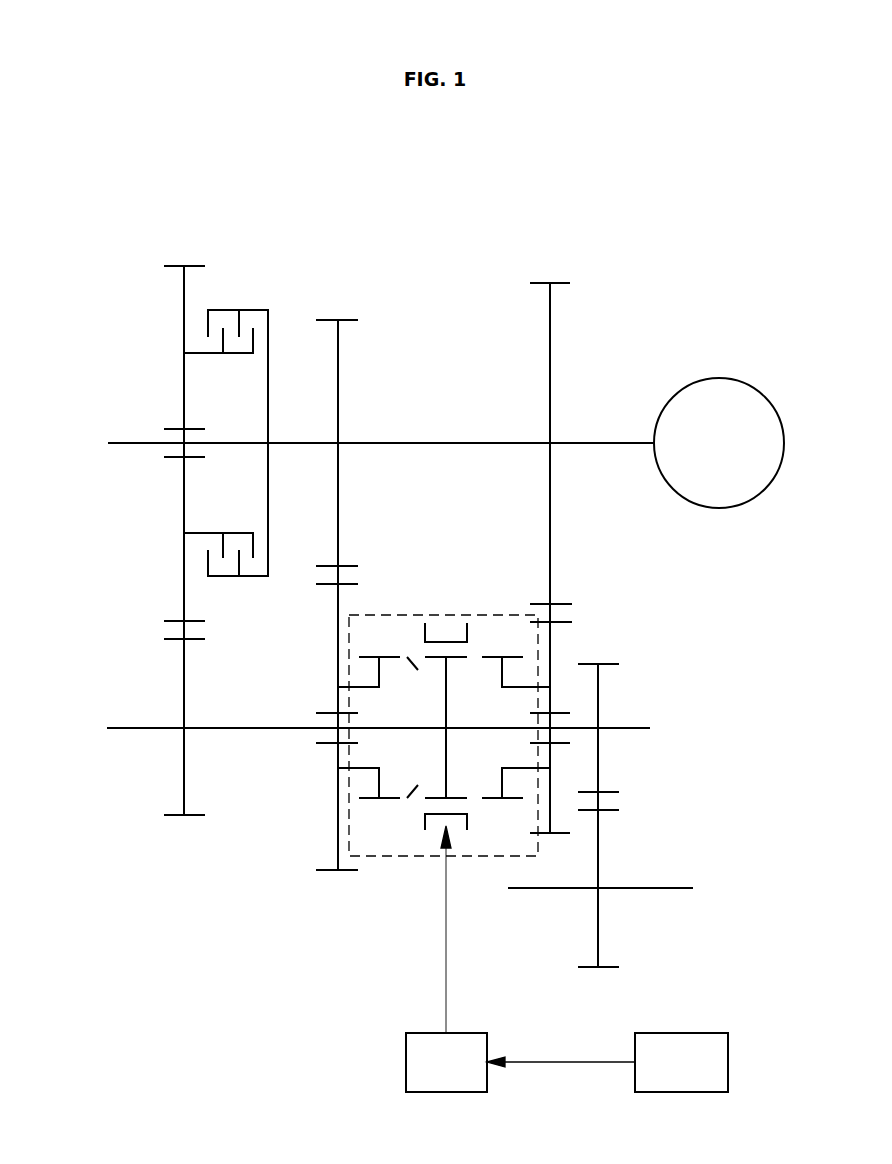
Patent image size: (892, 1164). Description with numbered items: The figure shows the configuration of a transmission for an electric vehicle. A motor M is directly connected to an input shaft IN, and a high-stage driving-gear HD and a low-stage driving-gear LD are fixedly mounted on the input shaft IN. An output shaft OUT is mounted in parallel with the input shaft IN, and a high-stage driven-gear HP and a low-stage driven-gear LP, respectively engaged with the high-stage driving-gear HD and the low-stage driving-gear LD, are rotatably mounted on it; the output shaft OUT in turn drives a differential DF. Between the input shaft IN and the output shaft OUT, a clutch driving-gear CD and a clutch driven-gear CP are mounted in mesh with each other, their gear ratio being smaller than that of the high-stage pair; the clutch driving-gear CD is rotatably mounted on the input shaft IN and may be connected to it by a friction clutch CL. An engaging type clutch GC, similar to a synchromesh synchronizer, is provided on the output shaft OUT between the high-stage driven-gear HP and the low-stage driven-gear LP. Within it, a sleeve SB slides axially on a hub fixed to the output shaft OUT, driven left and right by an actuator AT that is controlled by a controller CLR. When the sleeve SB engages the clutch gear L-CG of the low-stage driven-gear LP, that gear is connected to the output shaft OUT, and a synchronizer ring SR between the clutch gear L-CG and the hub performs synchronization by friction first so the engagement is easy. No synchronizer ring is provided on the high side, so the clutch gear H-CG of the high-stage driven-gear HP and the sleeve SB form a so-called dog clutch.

The input shaft IN is at (126, 440).
The output shaft OUT is at (127, 726).
The motor M is at (719, 443).
The clutch driving-gear CD is at (173, 264).
The clutch driven-gear CP is at (172, 820).
The friction clutch CL is at (247, 298).
The low-stage driving-gear LD is at (347, 319).
The low-stage driven-gear LP is at (325, 873).
The high-stage driving-gear HD is at (560, 281).
The high-stage driven-gear HP is at (563, 622).
The differential DF is at (624, 910).
The engaging type clutch GC is at (490, 613).
The clutch gear of the low-stage driven-gear L-CG is at (370, 798).
The clutch gear of the high-stage driven-gear H-CG is at (518, 799).
The synchronizer ring SR is at (416, 787).
The sleeve SB is at (467, 830).
The actuator AT is at (446, 1062).
The controller CLR is at (607, 1062).